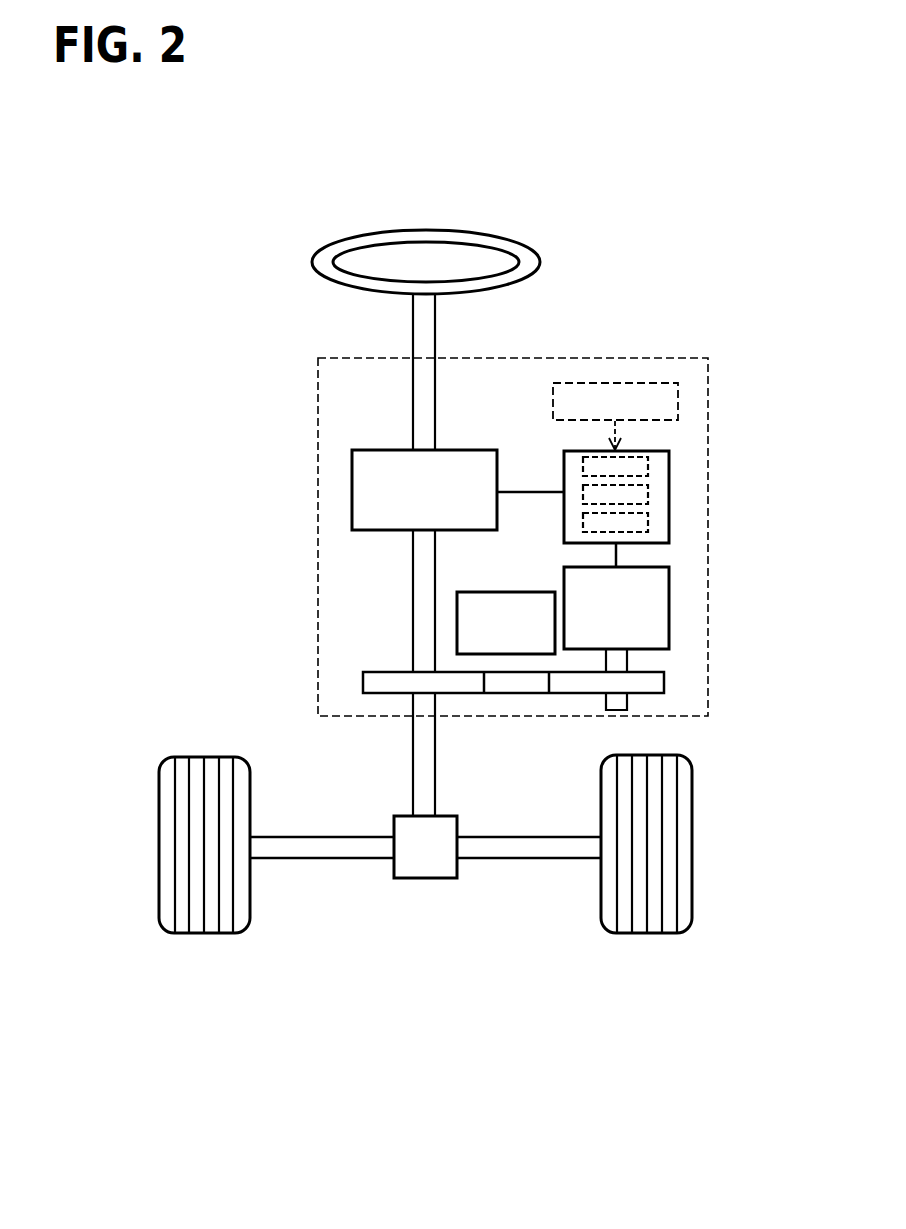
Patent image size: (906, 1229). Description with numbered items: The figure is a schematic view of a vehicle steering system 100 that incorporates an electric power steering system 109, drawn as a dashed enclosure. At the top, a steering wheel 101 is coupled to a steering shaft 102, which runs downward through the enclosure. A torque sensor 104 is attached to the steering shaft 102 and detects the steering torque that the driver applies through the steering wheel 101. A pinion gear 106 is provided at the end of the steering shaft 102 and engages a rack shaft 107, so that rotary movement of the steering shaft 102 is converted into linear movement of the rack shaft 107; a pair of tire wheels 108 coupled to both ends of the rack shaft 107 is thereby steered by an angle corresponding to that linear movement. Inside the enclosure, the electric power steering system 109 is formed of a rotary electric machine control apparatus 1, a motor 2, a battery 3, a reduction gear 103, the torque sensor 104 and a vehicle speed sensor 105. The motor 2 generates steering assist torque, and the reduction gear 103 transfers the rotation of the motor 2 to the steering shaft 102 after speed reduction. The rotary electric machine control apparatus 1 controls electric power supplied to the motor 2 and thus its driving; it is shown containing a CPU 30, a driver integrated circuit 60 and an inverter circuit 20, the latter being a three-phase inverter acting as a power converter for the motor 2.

The steering system 100 is at (378, 977).
The steering wheel 101 is at (312, 262).
The steering shaft 102 is at (413, 331).
The reduction gear 103 is at (664, 680).
The torque sensor 104 is at (352, 500).
The vehicle speed sensor 105 is at (678, 400).
The pinion gear 106 is at (417, 878).
The rack shaft 107 is at (313, 860).
The tire wheels 108 is at (222, 933).
The electric power steering system 109 is at (624, 358).
The rotary electric machine control apparatus 1 is at (669, 452).
The motor 2 is at (669, 600).
The battery 3 is at (505, 592).
The CPU 30 is at (648, 466).
The driver integrated circuit 60 is at (648, 493).
The inverter circuit 20 is at (648, 523).